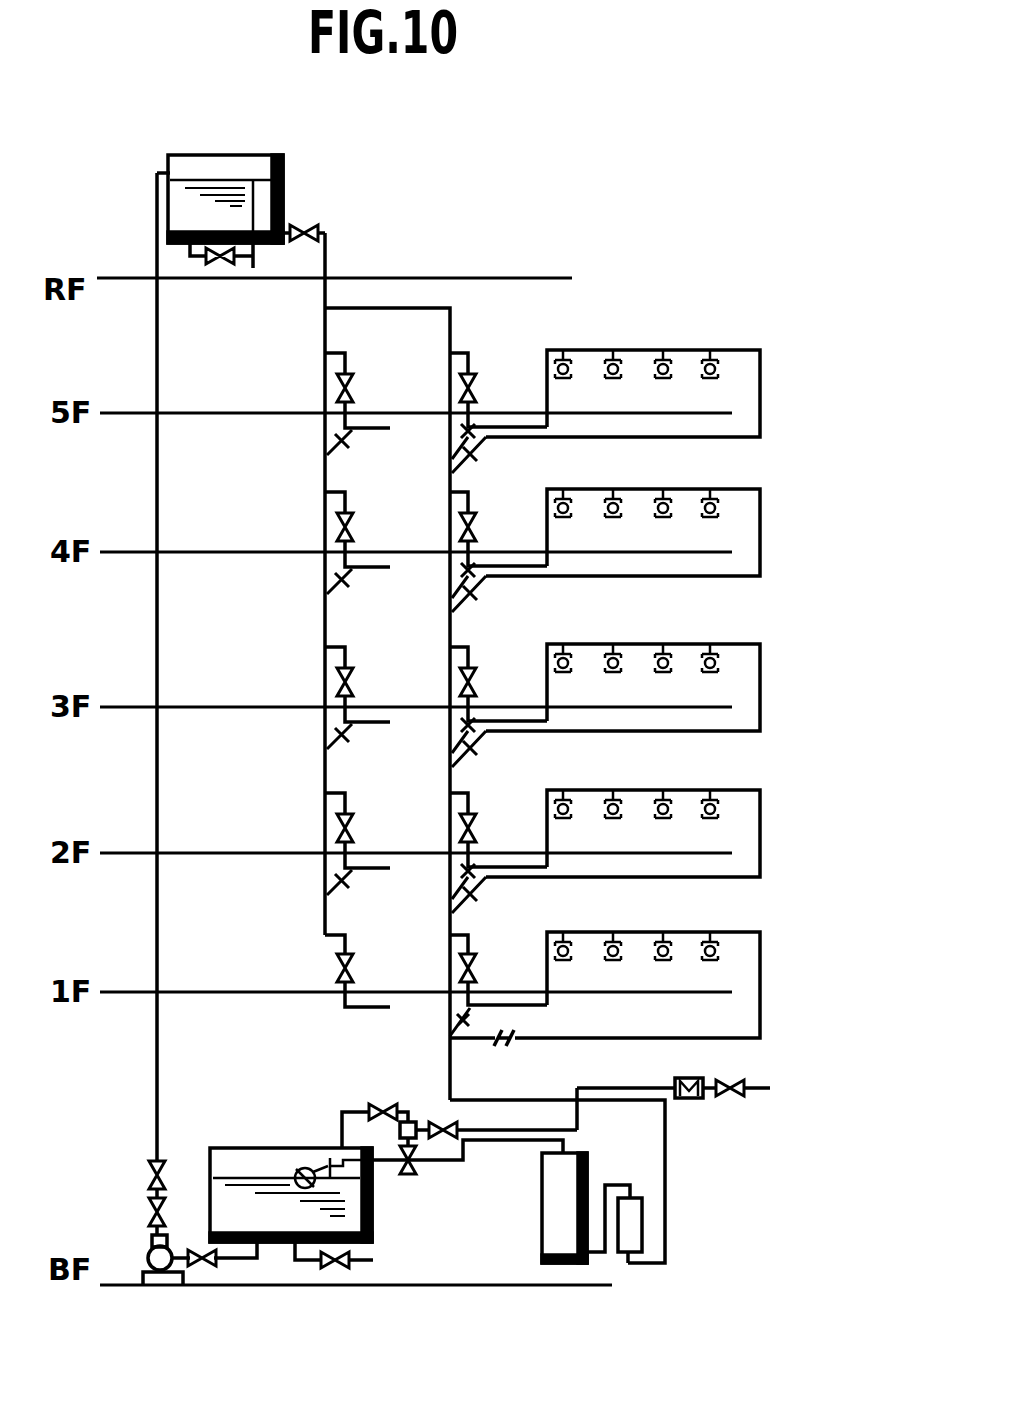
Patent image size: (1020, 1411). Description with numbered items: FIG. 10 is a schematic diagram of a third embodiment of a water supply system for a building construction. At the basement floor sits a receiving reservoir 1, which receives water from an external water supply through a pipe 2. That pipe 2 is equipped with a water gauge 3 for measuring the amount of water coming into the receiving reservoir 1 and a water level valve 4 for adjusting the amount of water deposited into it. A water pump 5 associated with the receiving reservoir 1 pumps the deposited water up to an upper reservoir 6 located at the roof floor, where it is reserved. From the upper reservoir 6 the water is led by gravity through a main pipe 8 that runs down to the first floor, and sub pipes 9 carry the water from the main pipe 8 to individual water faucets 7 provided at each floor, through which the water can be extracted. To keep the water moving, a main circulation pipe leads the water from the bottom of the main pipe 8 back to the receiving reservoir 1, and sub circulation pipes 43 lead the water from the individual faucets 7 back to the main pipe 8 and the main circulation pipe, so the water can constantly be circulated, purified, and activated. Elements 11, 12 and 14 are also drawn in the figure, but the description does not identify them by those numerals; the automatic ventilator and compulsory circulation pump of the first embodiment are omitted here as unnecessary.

The receiving reservoir 1 is at (371, 1244).
The pipe 2 is at (578, 1118).
The water gauge 3 is at (686, 1100).
The water level valve 4 is at (407, 1122).
The water pump 5 is at (150, 1255).
The upper reservoir 6 is at (200, 155).
The water faucet 7 is at (649, 669).
The main pipe 8 is at (326, 622).
The sub pipe 9 is at (498, 679).
The pressure switch 11 is at (618, 1250).
The pressure tank 12 is at (542, 1226).
The drain valve 14 is at (406, 741).
The sub circulation pipe 43 is at (652, 698).